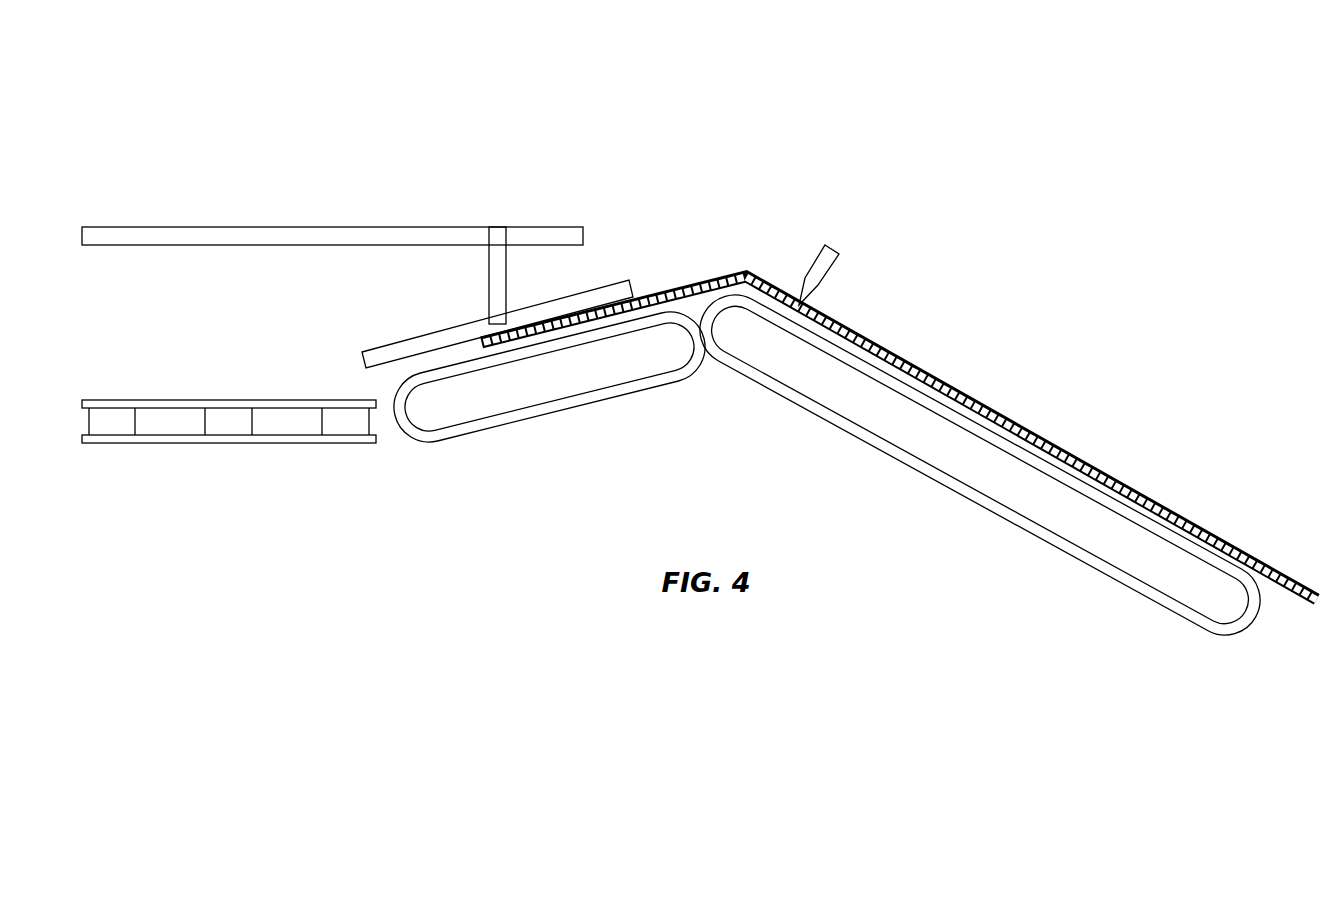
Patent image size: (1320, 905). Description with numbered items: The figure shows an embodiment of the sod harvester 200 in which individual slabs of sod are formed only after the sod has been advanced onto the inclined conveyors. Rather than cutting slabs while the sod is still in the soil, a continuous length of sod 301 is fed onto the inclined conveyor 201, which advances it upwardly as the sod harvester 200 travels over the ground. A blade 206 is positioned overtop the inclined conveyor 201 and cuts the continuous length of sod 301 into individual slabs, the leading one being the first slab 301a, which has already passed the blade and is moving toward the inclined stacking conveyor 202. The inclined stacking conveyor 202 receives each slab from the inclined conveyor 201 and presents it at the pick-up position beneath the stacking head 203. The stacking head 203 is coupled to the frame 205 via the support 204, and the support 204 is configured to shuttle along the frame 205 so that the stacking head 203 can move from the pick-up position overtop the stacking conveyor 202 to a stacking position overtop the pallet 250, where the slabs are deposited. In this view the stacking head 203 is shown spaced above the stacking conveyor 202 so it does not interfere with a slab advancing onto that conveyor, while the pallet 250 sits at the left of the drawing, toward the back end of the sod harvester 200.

The sod harvester 200 is at (724, 47).
The inclined conveyor 201 is at (880, 446).
The inclined stacking conveyor 202 is at (557, 413).
The stacking head 203 is at (360, 351).
The support 204 is at (507, 272).
The frame 205 is at (197, 227).
The blade 206 is at (827, 243).
The pallet 250 is at (228, 443).
The continuous length of sod 301 is at (938, 350).
The first slab 301a is at (688, 289).